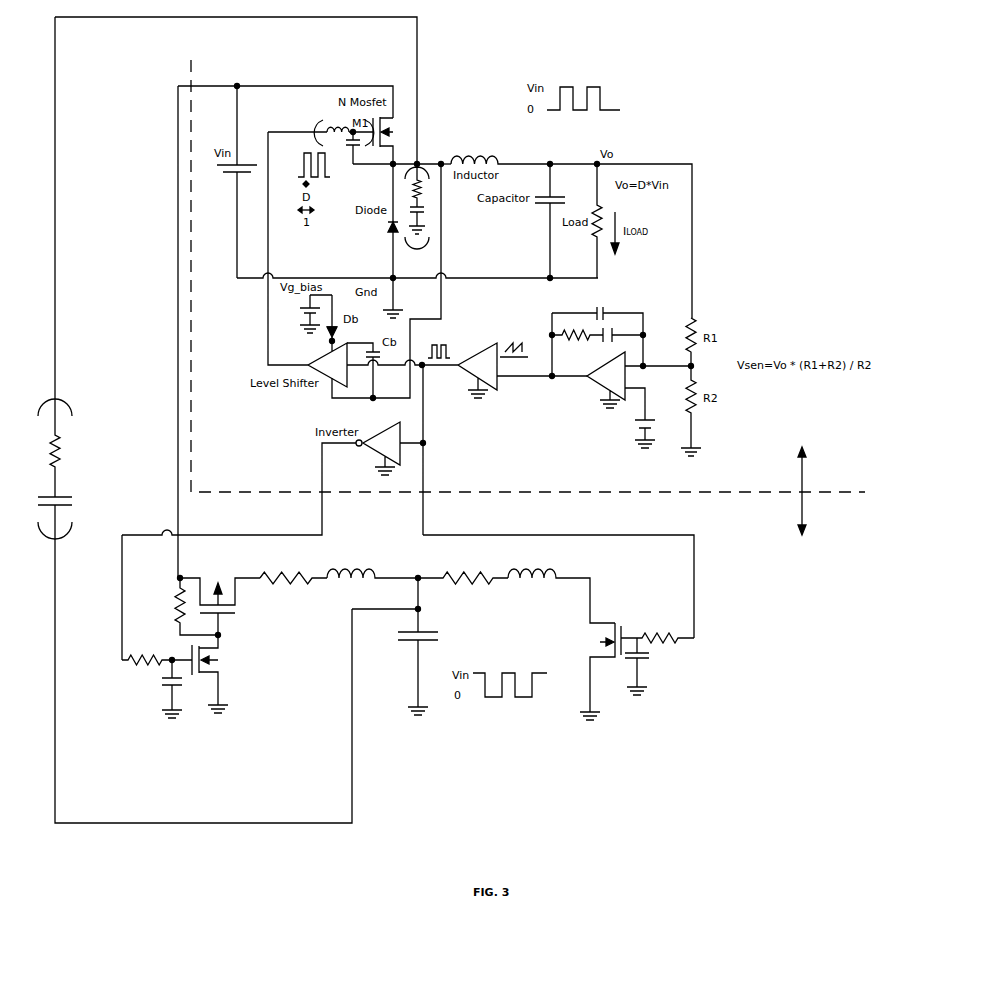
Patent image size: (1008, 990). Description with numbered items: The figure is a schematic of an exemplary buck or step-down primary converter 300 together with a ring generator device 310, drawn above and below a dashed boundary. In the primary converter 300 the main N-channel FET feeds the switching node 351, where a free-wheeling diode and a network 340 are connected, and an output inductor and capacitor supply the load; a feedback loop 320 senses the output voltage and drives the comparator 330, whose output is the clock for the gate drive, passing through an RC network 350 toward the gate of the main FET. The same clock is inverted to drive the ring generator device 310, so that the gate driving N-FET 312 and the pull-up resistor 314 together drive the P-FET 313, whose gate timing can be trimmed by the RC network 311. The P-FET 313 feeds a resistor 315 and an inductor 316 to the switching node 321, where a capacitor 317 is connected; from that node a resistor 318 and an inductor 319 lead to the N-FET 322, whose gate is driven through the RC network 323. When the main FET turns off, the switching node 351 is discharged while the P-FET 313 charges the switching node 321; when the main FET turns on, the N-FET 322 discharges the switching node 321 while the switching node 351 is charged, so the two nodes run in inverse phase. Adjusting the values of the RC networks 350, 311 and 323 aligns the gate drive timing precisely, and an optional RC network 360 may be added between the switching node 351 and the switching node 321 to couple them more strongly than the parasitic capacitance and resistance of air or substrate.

The primary converter 300 is at (539, 276).
The ring generator device 310 is at (804, 526).
The RC network 311 is at (149, 690).
The gate driving N-FET 312 is at (231, 674).
The P-FET 313 is at (225, 615).
The pull-up resistor 314 is at (185, 607).
The resistor 315 is at (293, 598).
The inductor 316 is at (372, 592).
The capacitor 317 is at (398, 662).
The resistor 318 is at (463, 599).
The inductor 319 is at (561, 596).
The feedback loop 320 is at (619, 368).
The switching node 321 is at (430, 604).
The N-FET 322 is at (591, 671).
The RC network 323 is at (669, 672).
The comparator 330 is at (504, 397).
The snubber network 340 is at (436, 211).
The RC network 350 is at (323, 114).
The switching node 351 is at (433, 152).
The RC network 360 is at (76, 441).